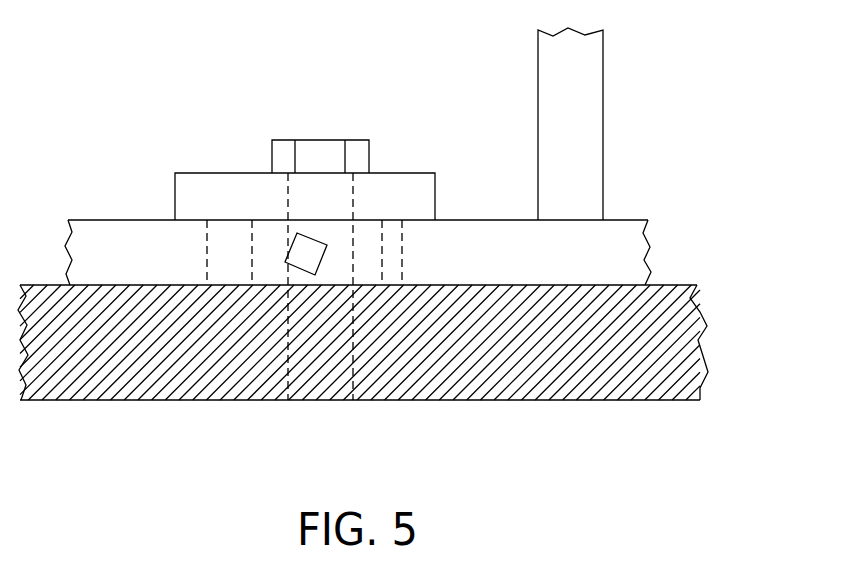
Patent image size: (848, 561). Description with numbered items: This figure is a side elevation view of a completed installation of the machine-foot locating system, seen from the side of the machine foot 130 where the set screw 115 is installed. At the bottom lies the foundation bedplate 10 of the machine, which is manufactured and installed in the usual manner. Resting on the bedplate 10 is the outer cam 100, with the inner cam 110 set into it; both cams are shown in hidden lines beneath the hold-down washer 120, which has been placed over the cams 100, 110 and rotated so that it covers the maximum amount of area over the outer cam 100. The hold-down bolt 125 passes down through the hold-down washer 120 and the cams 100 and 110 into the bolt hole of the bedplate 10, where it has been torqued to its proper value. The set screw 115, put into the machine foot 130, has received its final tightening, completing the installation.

The bedplate 10 is at (708, 340).
The outer cam 100 is at (207, 253).
The inner cam 110 is at (378, 252).
The set screw 115 is at (285, 263).
The hold-down washer 120 is at (175, 198).
The hold-down bolt 125 is at (272, 162).
The machine foot 130 is at (646, 258).